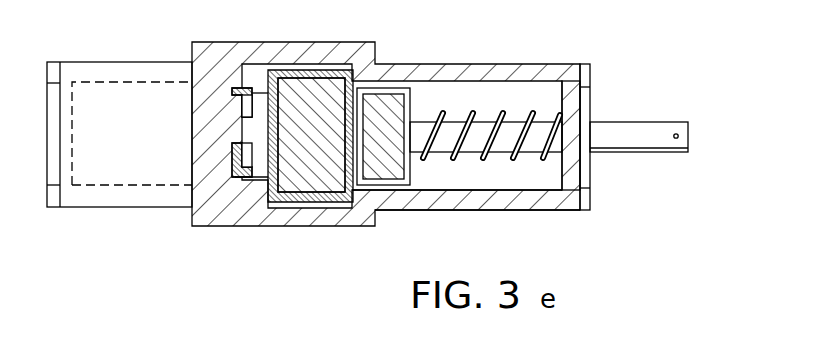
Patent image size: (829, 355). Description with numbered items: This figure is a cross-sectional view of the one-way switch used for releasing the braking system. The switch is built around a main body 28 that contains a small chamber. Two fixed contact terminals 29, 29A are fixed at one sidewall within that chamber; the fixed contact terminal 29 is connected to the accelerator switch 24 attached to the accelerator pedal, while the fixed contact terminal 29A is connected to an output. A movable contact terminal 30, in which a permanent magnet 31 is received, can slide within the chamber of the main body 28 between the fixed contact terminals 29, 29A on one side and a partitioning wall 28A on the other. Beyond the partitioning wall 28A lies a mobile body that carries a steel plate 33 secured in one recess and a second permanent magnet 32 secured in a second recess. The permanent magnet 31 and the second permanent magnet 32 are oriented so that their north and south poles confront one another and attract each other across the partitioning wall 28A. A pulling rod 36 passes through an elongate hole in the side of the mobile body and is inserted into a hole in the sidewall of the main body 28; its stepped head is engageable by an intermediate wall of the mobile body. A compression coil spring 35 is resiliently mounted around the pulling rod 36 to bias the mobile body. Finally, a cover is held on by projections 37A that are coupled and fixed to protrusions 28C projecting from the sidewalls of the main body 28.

The accelerator switch 24 is at (442, 113).
The main body 28 is at (460, 202).
The partitioning wall 28A is at (362, 78).
The protrusions 28C is at (580, 166).
The fixed contact terminal 29 is at (230, 165).
The fixed contact terminal 29A is at (231, 100).
The movable contact terminal 30 is at (296, 68).
The permanent magnet 31 is at (325, 88).
The second permanent magnet 32 is at (408, 104).
The steel plate 33 is at (257, 178).
The compression coil spring 35 is at (505, 113).
The pulling rod 36 is at (643, 128).
The projections 37A is at (585, 200).